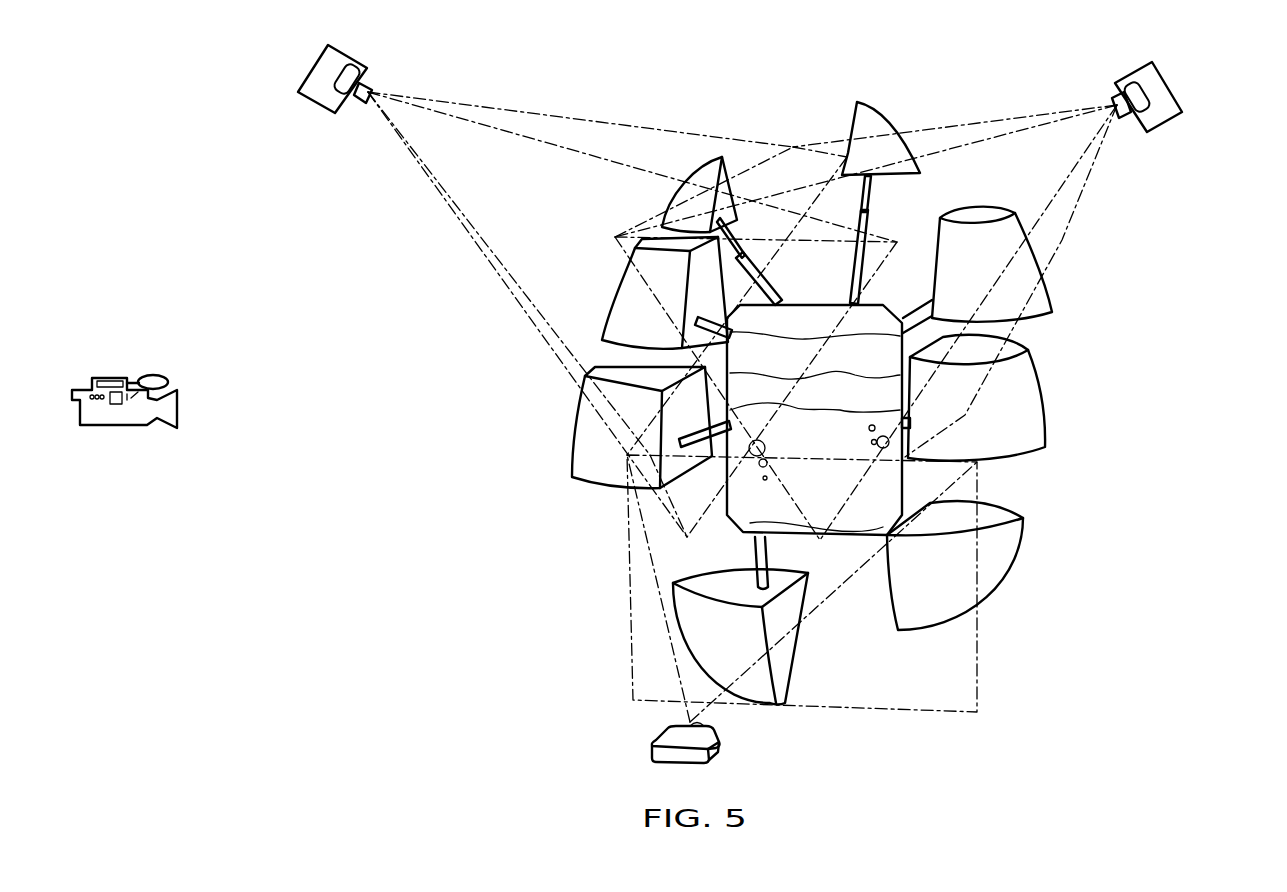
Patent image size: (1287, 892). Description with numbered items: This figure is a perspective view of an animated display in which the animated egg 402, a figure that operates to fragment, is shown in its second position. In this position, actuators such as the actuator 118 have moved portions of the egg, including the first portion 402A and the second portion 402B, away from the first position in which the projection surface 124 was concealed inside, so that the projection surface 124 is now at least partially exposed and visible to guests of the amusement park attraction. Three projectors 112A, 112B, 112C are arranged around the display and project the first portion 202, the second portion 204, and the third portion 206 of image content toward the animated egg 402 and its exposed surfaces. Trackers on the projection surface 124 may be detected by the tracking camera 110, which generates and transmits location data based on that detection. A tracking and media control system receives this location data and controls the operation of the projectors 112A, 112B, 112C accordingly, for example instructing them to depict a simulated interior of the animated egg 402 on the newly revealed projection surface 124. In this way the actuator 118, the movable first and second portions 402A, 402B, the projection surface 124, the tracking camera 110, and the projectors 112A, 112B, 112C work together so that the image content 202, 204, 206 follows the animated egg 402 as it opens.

The tracking camera 110 is at (107, 378).
The projector 112A is at (308, 73).
The projector 112B is at (1166, 118).
The projector 112C is at (714, 752).
The actuator 118 is at (757, 562).
The projection surface 124 is at (843, 503).
The first portion of image content 202 is at (622, 122).
The second portion of image content 204 is at (938, 132).
The third portion of image content 206 is at (977, 665).
The animated figure 402 is at (1185, 257).
The first portion 402A is at (1050, 300).
The second portion 402B is at (1043, 395).